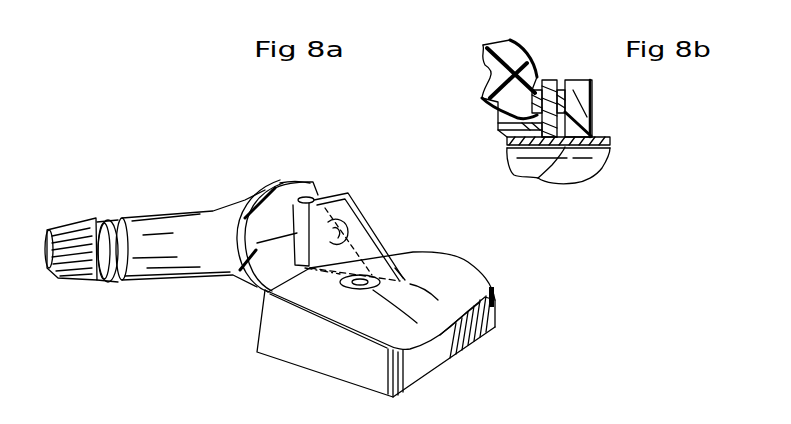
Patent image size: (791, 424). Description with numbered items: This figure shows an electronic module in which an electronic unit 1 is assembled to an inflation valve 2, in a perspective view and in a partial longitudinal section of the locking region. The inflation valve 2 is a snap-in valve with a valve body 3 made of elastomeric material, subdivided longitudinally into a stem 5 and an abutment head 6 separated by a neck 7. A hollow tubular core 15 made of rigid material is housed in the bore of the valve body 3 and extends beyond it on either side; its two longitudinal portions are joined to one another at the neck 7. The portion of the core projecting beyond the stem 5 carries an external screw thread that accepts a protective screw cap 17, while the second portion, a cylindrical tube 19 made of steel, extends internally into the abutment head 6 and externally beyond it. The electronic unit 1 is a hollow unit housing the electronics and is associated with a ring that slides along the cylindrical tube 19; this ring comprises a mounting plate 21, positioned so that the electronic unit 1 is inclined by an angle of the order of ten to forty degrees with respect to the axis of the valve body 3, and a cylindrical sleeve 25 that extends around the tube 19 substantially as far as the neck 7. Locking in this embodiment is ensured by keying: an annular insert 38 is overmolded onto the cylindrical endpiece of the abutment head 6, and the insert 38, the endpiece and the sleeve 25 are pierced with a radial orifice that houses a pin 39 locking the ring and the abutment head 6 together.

In FIG. 8A, the electronic unit 1 is at (507, 302).
In FIG. 8A, the inflation valve 2 is at (206, 146).
In FIG. 8A, the valve body 3 is at (263, 156).
In FIG. 8A, the stem 5 is at (182, 211).
In FIG. 8A, the abutment head 6 is at (310, 192).
In FIG. 8A, the neck 7 is at (282, 183).
In FIG. 8A, the hollow tubular core 15 is at (110, 240).
In FIG. 8A, the protective screw cap 17 is at (73, 263).
In FIG. 8A, the cylindrical tube 19 is at (337, 236).
In FIG. 8B, the cylindrical tube 19 is at (538, 178).
In FIG. 8B, the mounting plate 21 is at (577, 102).
In FIG. 8B, the cylindrical sleeve 25 is at (498, 131).
In FIG. 8A, the annular insert 38 is at (245, 275).
In FIG. 8B, the annular insert 38 is at (487, 60).
In FIG. 8A, the pin 39 is at (313, 190).
In FIG. 8B, the pin 39 is at (497, 100).